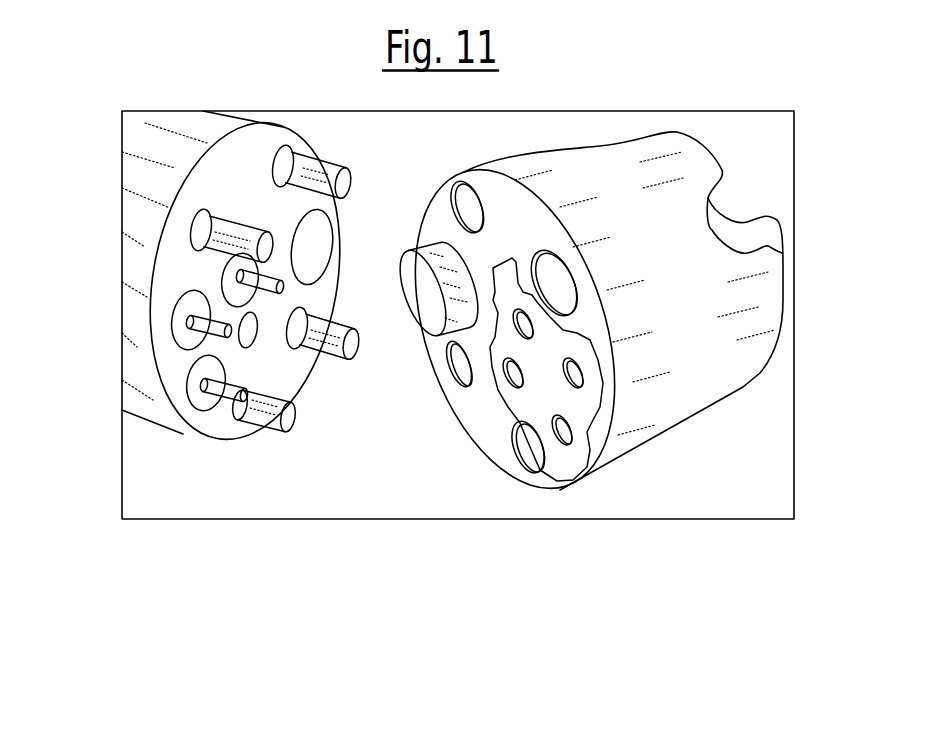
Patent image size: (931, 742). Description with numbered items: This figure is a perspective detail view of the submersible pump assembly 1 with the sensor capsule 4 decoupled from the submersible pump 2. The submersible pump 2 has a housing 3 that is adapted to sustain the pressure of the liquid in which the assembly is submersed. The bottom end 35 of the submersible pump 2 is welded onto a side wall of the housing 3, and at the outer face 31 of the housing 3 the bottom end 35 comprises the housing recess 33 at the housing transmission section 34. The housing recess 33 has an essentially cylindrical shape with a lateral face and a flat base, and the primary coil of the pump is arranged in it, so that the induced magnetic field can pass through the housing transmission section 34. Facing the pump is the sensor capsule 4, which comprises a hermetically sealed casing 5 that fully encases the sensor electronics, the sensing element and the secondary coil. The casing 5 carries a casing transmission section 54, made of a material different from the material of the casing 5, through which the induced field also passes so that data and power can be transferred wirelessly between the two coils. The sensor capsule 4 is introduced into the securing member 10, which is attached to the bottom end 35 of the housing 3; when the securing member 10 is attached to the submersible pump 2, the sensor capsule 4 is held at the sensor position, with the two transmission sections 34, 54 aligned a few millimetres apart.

The submersible pump assembly 1 is at (375, 543).
The submersible pump 2 is at (205, 351).
The housing 3 is at (135, 401).
The sensor capsule 4 is at (434, 368).
The casing 5 is at (443, 325).
The securing member 10 is at (577, 371).
The outer face 31 is at (253, 372).
The housing recess 33 is at (321, 357).
The housing transmission section 34 is at (313, 255).
The bottom end 35 is at (275, 359).
The casing transmission section 54 is at (413, 297).